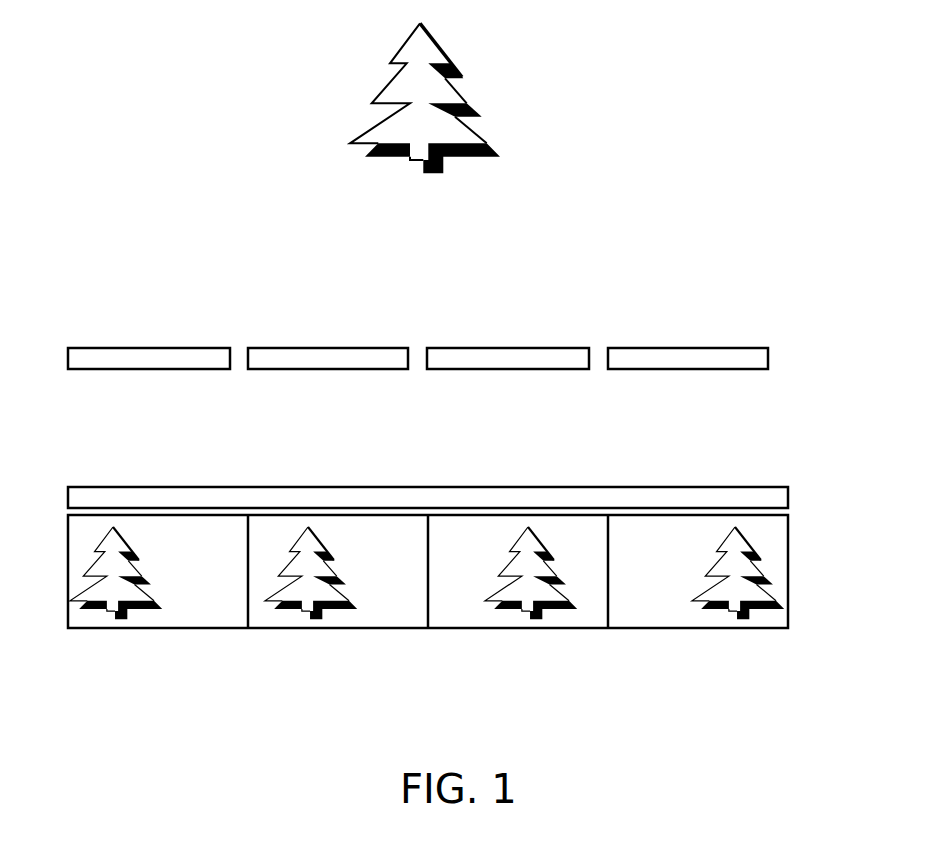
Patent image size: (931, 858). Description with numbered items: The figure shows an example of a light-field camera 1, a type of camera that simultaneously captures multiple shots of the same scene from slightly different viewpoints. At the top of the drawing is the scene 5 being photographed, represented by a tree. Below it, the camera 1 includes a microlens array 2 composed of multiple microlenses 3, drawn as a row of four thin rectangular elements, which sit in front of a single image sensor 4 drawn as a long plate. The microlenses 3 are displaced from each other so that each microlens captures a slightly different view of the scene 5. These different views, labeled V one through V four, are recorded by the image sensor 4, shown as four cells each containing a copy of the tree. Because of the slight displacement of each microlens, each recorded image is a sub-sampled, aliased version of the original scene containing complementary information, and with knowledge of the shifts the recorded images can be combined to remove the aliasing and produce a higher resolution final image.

The light-field camera 1 is at (447, 360).
The microlens array 2 is at (447, 330).
The microlens 3 is at (167, 349).
The image sensor 4 is at (788, 498).
The scene 5 is at (447, 93).